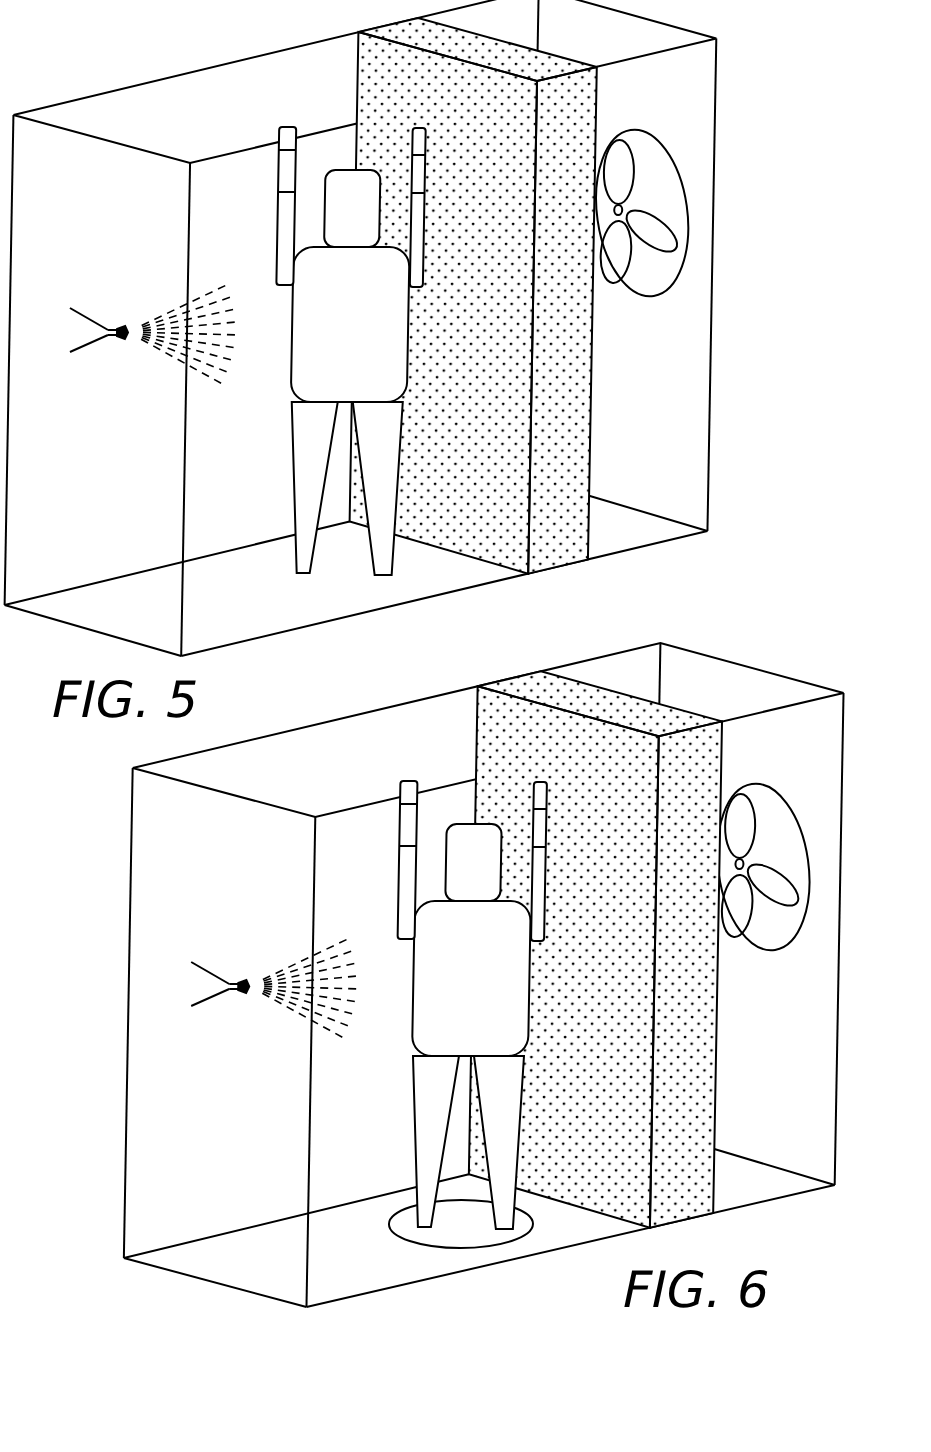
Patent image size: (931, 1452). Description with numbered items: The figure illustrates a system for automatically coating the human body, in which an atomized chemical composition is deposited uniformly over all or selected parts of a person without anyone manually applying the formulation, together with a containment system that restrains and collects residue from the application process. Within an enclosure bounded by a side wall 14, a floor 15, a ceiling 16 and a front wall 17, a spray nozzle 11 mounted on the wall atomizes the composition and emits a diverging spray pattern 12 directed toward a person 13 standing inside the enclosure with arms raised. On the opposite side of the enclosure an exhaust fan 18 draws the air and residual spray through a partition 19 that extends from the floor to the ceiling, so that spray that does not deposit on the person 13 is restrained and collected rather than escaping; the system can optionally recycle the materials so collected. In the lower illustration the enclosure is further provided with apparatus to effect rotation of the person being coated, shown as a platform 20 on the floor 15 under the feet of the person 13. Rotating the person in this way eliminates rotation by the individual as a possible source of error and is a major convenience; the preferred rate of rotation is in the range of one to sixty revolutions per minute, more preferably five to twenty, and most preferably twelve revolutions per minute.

In FIG. 5, the spray nozzle 11 is at (94, 345).
In FIG. 6, the spray nozzle 11 is at (219, 1007).
In FIG. 5, the spray pattern 12 is at (236, 397).
In FIG. 6, the spray pattern 12 is at (300, 1000).
In FIG. 5, the person 13 is at (301, 478).
In FIG. 6, the person 13 is at (436, 1005).
In FIG. 5, the side wall 14 is at (70, 538).
In FIG. 6, the side wall 14 is at (199, 1193).
In FIG. 5, the floor 15 is at (255, 613).
In FIG. 6, the floor 15 is at (393, 1266).
In FIG. 5, the ceiling 16 is at (198, 123).
In FIG. 6, the ceiling 16 is at (331, 776).
In FIG. 5, the front wall 17 is at (164, 620).
In FIG. 6, the front wall 17 is at (296, 1275).
In FIG. 5, the exhaust fan 18 is at (641, 270).
In FIG. 6, the exhaust fan 18 is at (763, 902).
In FIG. 5, the partition 19 is at (567, 521).
In FIG. 6, the partition 19 is at (700, 1174).
In FIG. 6, the platform 20 is at (496, 1238).